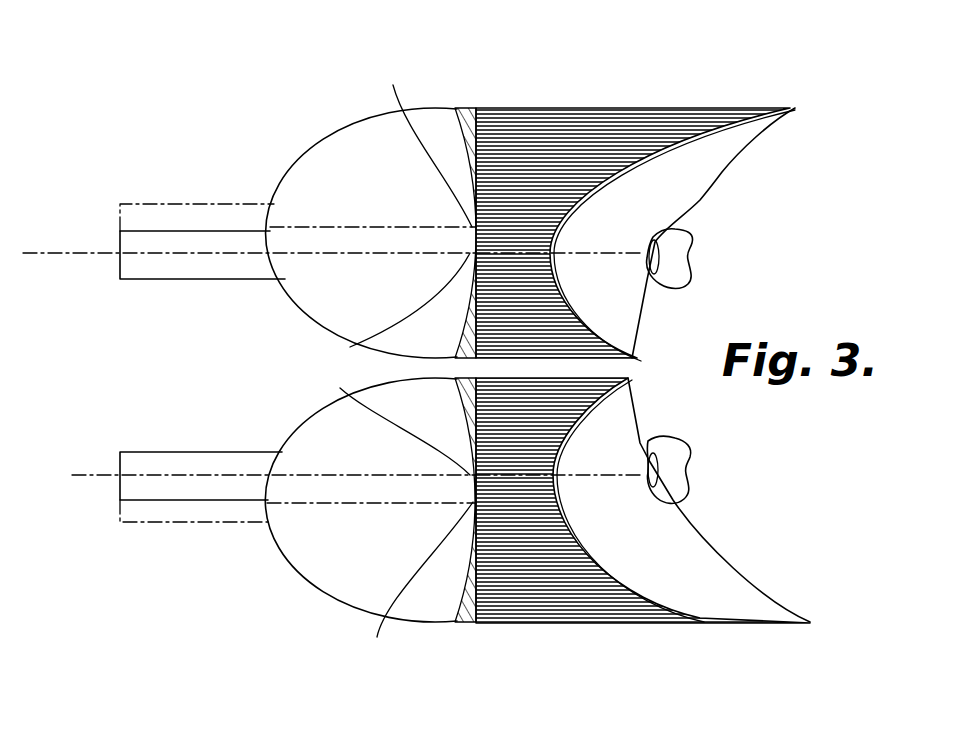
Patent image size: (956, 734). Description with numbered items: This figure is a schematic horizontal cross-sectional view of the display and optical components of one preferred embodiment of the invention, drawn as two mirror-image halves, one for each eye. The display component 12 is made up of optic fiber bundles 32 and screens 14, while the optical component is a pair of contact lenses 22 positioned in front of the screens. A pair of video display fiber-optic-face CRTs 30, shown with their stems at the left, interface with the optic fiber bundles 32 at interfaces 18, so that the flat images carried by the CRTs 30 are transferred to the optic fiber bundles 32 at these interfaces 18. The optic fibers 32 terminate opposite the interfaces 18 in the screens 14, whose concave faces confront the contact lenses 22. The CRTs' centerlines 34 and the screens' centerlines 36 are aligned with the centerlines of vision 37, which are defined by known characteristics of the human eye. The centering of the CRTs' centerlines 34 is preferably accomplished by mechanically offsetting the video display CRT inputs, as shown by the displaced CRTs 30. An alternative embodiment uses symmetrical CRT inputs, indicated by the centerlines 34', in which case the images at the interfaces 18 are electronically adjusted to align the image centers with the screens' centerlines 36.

The display component 12 is at (643, 370).
The screens 14 is at (660, 143).
The interfaces 18 is at (458, 108).
The contact lenses 22 is at (653, 233).
The video display fiber-optic-face CRTs 30 is at (347, 143).
The optic fiber bundles 32 is at (558, 108).
The CRTs' centerlines 34 is at (399, 364).
The centerlines of symmetrical CRT inputs 34' is at (421, 358).
The screens' centerlines 36 is at (550, 253).
The centerlines of vision 37 is at (40, 252).